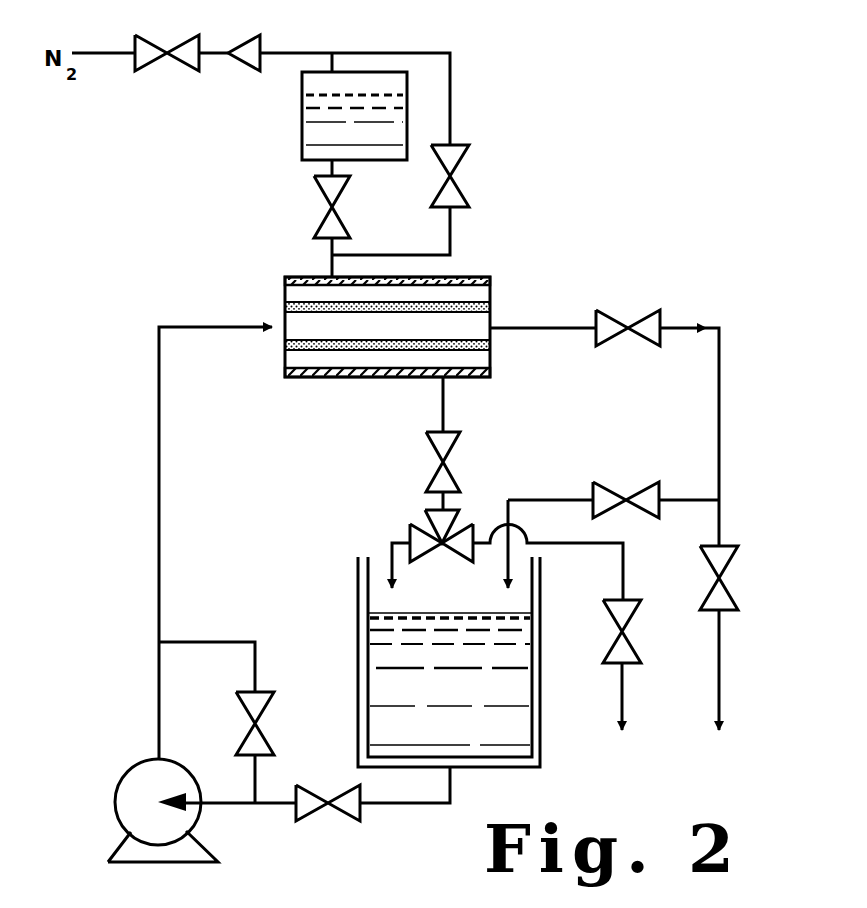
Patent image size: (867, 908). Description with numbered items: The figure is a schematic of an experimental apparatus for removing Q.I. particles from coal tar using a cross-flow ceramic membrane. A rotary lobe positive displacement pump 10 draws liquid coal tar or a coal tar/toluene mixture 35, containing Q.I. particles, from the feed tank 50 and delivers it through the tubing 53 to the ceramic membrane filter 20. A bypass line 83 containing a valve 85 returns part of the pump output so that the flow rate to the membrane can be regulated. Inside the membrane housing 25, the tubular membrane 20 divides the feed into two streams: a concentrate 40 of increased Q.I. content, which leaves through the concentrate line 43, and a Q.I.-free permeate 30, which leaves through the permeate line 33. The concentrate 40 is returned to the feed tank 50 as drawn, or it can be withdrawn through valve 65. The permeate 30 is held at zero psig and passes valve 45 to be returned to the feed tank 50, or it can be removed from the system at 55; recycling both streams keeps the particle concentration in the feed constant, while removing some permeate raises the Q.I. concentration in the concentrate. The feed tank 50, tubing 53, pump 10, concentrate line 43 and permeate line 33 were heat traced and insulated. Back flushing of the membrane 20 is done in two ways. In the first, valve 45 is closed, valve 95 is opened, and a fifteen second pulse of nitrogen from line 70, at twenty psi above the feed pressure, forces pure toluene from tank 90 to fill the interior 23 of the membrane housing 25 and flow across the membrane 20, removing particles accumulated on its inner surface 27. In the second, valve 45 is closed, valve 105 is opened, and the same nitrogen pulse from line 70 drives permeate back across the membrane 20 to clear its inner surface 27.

The rotary lobe positive displacement pump 10 is at (140, 762).
The ceramic membrane filter 20 is at (375, 323).
The interior of membrane housing 23 is at (300, 295).
The membrane housing 25 is at (312, 277).
The inner surface of membrane 27 is at (415, 326).
The permeate 30 is at (460, 412).
The permeate line 33 is at (440, 383).
The coal tar or coal tar/toluene mixture 35 is at (466, 698).
The concentrate 40 is at (558, 338).
The concentrate line 43 is at (497, 328).
The valve 45 is at (432, 470).
The feed tank 50 is at (540, 715).
The tubing 53 is at (160, 505).
The permeate removal point 55 is at (622, 683).
The valve 65 is at (722, 612).
The nitrogen line 70 is at (105, 53).
The bypass line 83 is at (212, 640).
The valve 85 is at (272, 718).
The toluene tank 90 is at (302, 105).
The valve 95 is at (332, 207).
The valve 105 is at (457, 165).